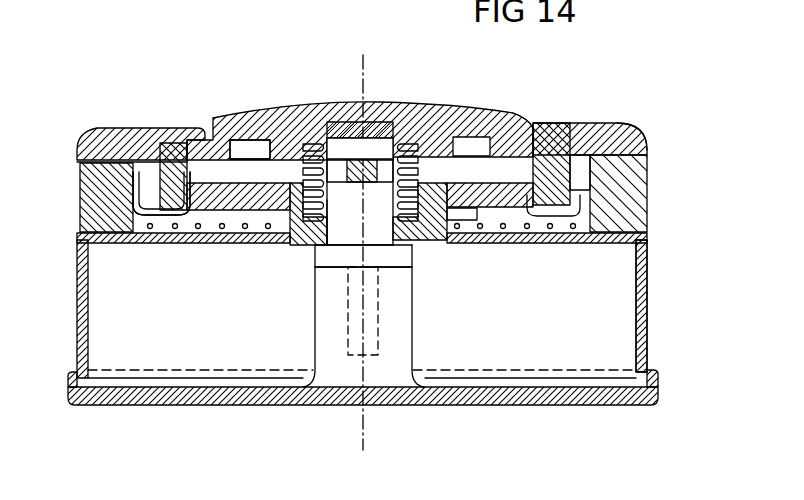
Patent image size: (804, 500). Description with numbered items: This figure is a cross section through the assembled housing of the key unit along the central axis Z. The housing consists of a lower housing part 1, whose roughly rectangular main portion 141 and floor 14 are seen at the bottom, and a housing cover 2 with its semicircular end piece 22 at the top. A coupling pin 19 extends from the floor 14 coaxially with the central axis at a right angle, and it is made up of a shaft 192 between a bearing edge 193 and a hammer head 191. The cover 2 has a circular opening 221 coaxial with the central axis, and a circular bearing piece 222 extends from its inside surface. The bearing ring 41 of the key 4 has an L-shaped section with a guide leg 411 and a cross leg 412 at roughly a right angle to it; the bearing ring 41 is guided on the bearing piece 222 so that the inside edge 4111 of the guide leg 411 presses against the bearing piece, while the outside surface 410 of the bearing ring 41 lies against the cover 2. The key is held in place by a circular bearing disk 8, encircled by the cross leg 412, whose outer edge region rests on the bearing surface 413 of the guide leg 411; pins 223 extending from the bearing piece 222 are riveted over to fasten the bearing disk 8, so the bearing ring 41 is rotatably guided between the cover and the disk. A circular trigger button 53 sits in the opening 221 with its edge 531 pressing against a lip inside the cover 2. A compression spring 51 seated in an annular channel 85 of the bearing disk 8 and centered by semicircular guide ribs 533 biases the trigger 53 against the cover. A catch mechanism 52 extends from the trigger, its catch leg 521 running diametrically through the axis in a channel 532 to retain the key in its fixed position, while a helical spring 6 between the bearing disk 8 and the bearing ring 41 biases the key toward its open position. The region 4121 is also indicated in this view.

The lower housing part 1 is at (363, 345).
The floor 14 is at (363, 345).
The main portion 141 is at (423, 393).
The coupling pin 19 is at (410, 357).
The shaft 192 is at (380, 223).
The bearing edge 193 is at (323, 265).
The compression spring 51 is at (316, 228).
The trigger button 53 is at (348, 118).
The hammer head 191 is at (372, 158).
The catch mechanism 52 is at (334, 132).
The catch leg 521 is at (318, 128).
The housing cover 2 is at (406, 114).
The semicircular end piece 22 is at (560, 122).
The channel 532 is at (307, 110).
The edge 531 is at (510, 130).
The circular opening 221 is at (516, 108).
The guide ribs 533 is at (247, 117).
The annular channel 85 is at (440, 215).
The key 4 is at (378, 220).
The bearing ring 41 is at (378, 220).
The guide leg 411 is at (140, 170).
The bearing surface 413 is at (100, 152).
The outside surface 410 is at (627, 123).
The inside edge 4111 is at (647, 160).
The cross leg 412 is at (623, 215).
The housing side wall 4121 is at (648, 263).
The bearing piece 222 is at (170, 167).
The pins 223 is at (170, 213).
The bearing disk 8 is at (217, 210).
The helical spring 6 is at (513, 226).